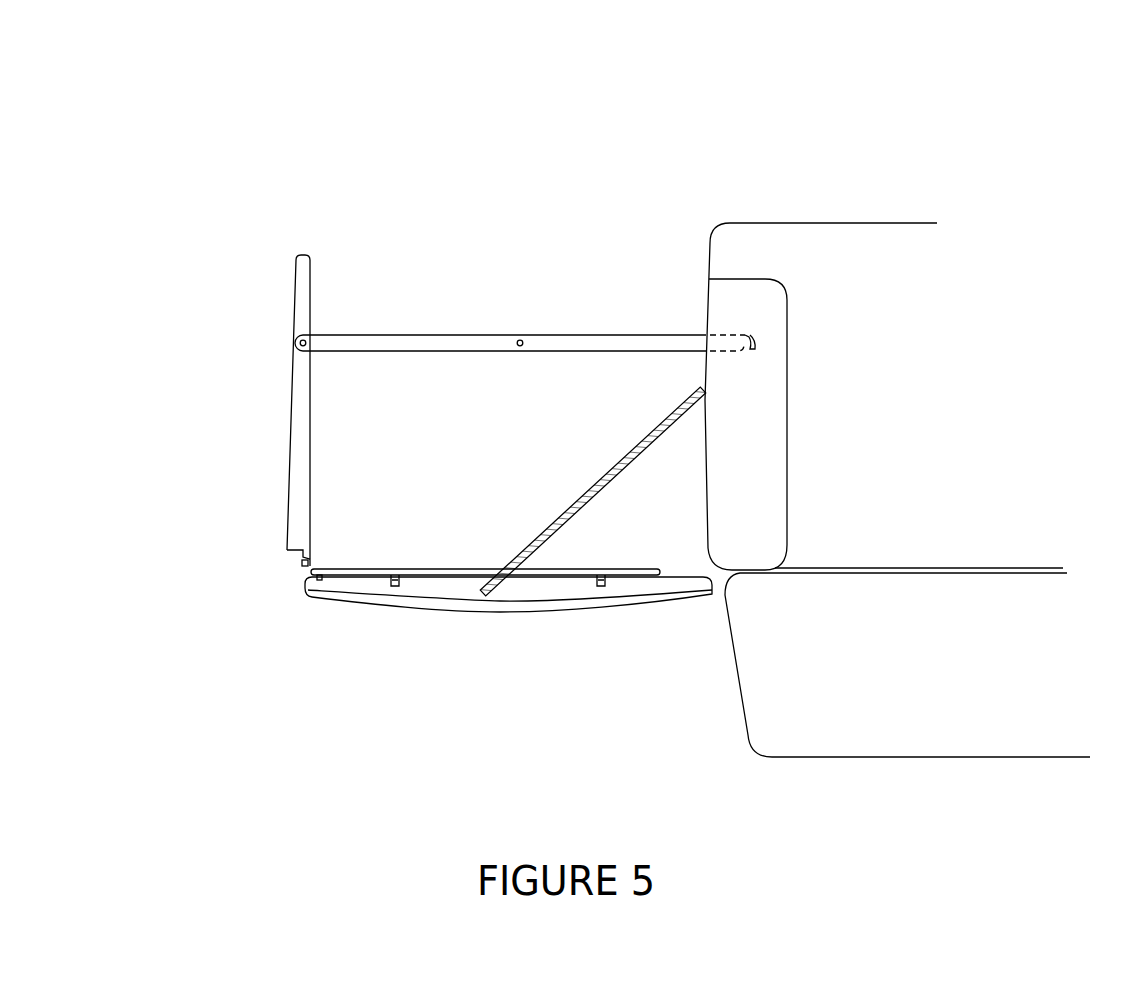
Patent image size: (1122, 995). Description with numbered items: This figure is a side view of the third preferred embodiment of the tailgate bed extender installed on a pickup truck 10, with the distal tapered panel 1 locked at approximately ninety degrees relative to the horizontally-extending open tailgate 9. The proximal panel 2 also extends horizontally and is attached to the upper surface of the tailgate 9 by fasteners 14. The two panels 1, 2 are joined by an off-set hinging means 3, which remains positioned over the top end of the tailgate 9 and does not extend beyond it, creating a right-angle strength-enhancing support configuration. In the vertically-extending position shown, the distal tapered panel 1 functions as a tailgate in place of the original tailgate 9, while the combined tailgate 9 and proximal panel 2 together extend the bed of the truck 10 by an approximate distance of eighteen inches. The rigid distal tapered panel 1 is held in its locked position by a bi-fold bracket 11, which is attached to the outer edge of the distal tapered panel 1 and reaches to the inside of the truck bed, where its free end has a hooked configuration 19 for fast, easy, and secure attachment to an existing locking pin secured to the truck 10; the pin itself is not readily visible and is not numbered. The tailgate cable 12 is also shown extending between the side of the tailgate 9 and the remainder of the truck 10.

The distal tapered panel 1 is at (300, 256).
The proximal panel 2 is at (458, 570).
The hinging means 3 is at (300, 568).
The tailgate 9 is at (560, 598).
The truck 10 is at (853, 273).
The bi-fold bracket 11 is at (497, 332).
The tailgate cable 12 is at (623, 472).
The fasteners 14 is at (392, 568).
The hooked configuration 19 is at (747, 333).